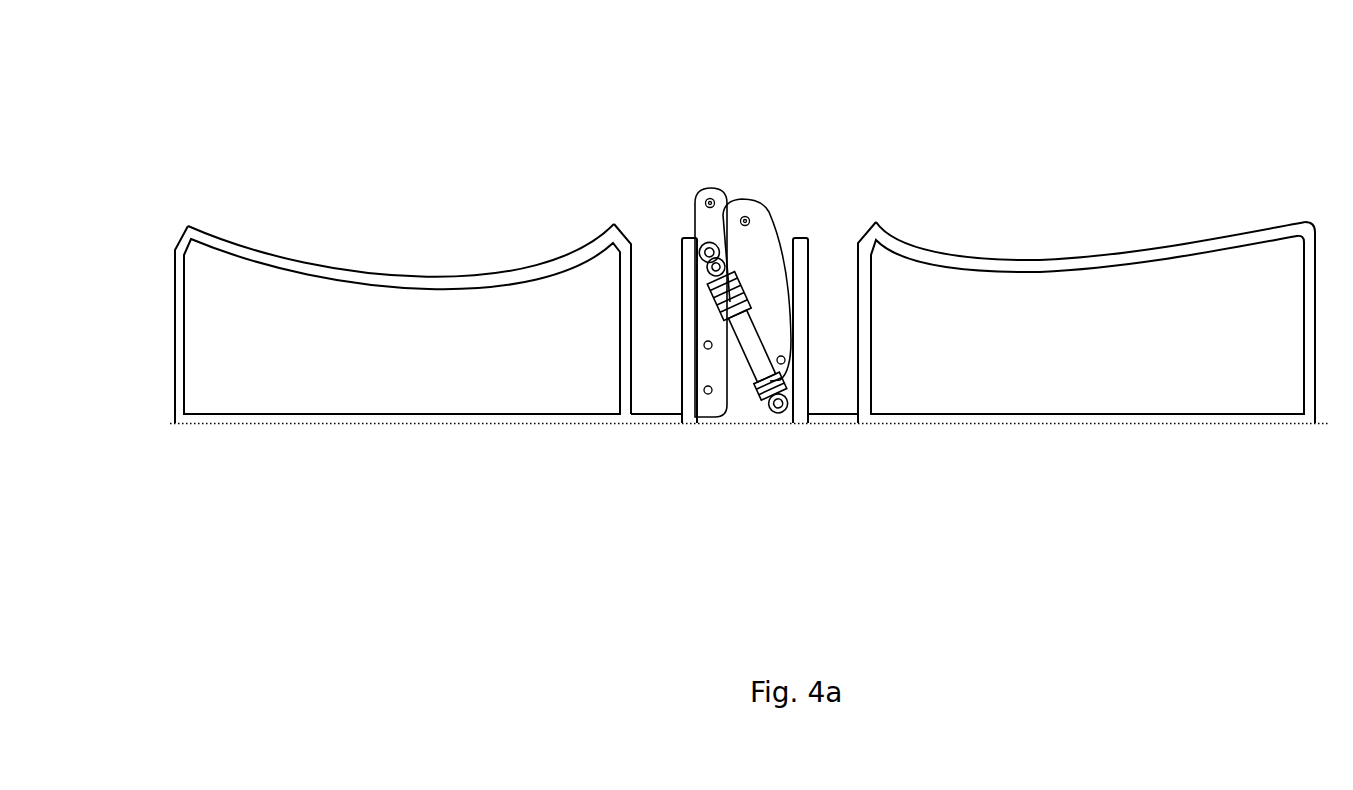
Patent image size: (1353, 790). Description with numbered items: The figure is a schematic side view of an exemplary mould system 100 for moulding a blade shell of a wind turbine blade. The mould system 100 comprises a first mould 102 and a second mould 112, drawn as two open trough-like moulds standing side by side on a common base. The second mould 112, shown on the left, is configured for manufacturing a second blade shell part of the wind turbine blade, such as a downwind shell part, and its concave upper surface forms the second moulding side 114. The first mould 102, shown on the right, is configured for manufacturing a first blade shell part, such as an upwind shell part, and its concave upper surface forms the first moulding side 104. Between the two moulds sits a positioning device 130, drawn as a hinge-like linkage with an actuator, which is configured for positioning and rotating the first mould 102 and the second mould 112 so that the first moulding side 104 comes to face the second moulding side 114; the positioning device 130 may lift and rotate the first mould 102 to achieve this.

The mould system 100 is at (530, 120).
The second mould 112 is at (328, 205).
The second moulding side 114 is at (475, 280).
The first mould 102 is at (1038, 182).
The first moulding side 104 is at (1187, 240).
The positioning device 130 is at (732, 195).